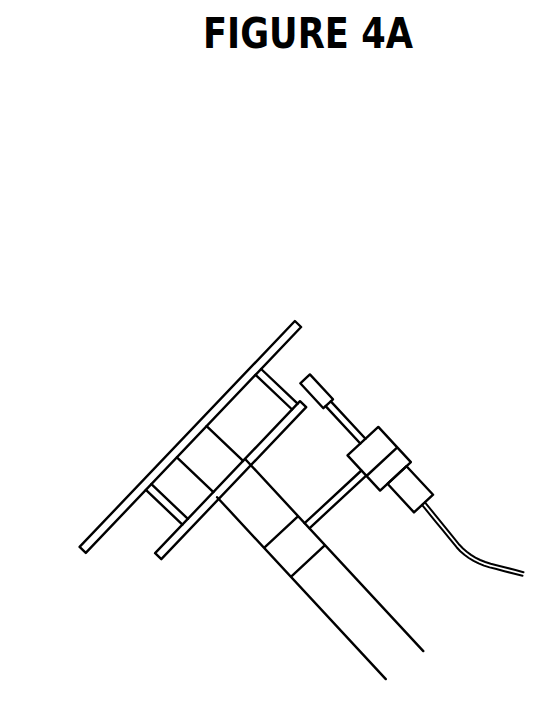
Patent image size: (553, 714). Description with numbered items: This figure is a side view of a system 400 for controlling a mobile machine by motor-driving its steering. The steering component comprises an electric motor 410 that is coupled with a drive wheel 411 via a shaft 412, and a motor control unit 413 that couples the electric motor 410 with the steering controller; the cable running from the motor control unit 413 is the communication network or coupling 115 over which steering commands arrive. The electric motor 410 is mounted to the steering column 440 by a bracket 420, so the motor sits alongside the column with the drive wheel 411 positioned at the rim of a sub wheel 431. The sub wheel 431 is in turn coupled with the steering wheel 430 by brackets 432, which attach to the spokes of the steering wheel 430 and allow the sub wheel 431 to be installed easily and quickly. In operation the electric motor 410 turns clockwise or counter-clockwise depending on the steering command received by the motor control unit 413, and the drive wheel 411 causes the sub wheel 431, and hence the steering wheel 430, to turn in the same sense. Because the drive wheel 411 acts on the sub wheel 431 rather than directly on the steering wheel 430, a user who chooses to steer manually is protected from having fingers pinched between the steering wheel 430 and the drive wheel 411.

The system for controlling a mobile machine 400 is at (66, 208).
The electric motor 410 is at (378, 429).
The drive wheel 411 is at (321, 387).
The shaft 412 is at (345, 427).
The motor control unit 413 is at (424, 485).
The bracket 420 is at (338, 502).
The steering wheel 430 is at (248, 370).
The sub wheel 431 is at (159, 557).
The brackets 432 is at (270, 377).
The steering column 440 is at (321, 609).
The communication network or coupling 115 is at (500, 565).